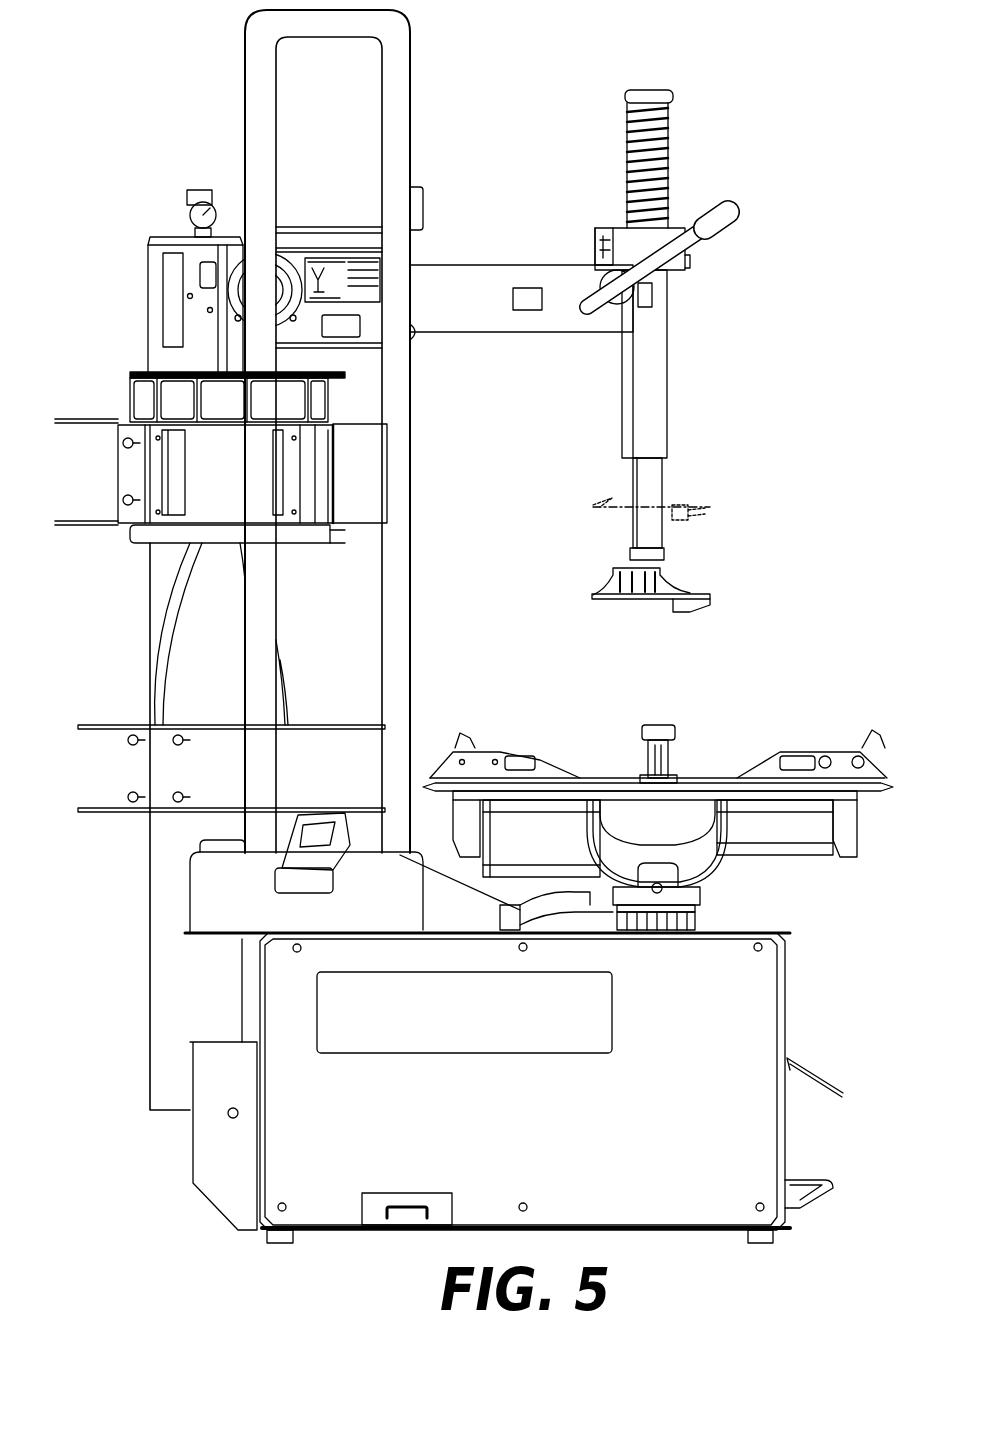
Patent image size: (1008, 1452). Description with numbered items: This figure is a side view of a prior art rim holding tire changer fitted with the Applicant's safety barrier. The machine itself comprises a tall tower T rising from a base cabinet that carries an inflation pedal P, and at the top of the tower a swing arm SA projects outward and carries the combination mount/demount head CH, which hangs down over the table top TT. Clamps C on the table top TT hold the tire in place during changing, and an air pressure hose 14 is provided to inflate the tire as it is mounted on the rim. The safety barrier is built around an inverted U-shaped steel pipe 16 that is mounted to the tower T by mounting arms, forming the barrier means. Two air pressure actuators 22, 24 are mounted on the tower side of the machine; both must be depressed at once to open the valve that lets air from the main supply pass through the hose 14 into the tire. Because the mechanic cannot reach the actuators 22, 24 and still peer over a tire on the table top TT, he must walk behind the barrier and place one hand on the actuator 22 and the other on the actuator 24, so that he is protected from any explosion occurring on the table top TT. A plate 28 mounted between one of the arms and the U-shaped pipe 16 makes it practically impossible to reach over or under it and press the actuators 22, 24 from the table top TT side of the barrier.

The inverted U-shaped steel pipe 16 is at (400, 102).
The plate 28 is at (292, 413).
The air pressure actuator 22 is at (288, 455).
The air pressure actuator 24 is at (162, 472).
The tower T is at (158, 577).
The air pressure hose 14 is at (172, 620).
The swing arm SA is at (442, 322).
The combination mount/demount head CH is at (632, 600).
The table top TT is at (683, 785).
The clamps C is at (462, 733).
The inflation pedal P is at (405, 1207).